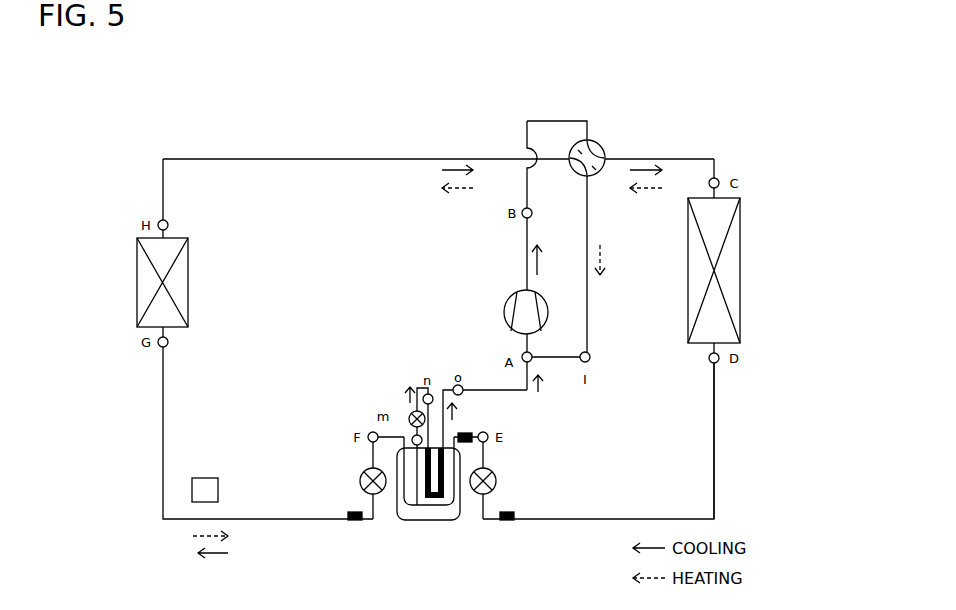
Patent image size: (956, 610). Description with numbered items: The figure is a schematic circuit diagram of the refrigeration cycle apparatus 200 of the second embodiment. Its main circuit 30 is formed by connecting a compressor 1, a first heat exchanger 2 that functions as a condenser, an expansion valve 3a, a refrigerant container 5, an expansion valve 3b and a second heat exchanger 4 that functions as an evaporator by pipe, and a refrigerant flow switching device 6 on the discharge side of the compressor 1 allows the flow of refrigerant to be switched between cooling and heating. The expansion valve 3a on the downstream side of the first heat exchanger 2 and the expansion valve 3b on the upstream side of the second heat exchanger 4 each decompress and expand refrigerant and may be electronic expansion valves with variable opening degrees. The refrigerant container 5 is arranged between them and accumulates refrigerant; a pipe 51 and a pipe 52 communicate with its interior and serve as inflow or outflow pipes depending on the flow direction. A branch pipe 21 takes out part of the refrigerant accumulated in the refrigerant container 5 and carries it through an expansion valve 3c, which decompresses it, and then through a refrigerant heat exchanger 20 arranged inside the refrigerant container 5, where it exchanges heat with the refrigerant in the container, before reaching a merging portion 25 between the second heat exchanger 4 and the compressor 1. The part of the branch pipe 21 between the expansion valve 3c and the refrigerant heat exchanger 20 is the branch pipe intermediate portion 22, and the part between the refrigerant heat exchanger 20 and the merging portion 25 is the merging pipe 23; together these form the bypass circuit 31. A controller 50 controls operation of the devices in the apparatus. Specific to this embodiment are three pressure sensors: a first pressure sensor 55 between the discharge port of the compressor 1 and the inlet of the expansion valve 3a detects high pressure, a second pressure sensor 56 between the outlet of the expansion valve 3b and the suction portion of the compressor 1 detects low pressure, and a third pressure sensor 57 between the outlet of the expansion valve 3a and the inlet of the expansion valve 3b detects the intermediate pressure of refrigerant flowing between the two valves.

The refrigeration cycle apparatus 200 is at (142, 146).
The compressor 1 is at (505, 300).
The first heat exchanger 2 is at (742, 258).
The second heat exchanger 4 is at (190, 263).
The refrigerant flow switching device 6 is at (605, 150).
The merging portion 25 is at (521, 352).
The merging pipe 23 is at (510, 392).
The bypass circuit 31 is at (548, 408).
The main circuit 30 is at (722, 437).
The branch pipe intermediate portion 22 is at (417, 387).
The expansion valve (third pressure reducing device) 3c is at (409, 415).
The expansion valve (second pressure reducing device) 3b is at (359, 475).
The expansion valve (first pressure reducing device) 3a is at (498, 474).
The second pressure sensor 56 is at (348, 514).
The first pressure sensor 55 is at (514, 514).
The third pressure sensor 57 is at (466, 434).
The controller 50 is at (203, 478).
The refrigerant heat exchanger 20 is at (437, 505).
The refrigerant container 5 is at (447, 515).
The branch pipe 21 is at (417, 500).
The pipe (second pipe) 52 is at (399, 508).
The pipe (first pipe) 51 is at (459, 512).